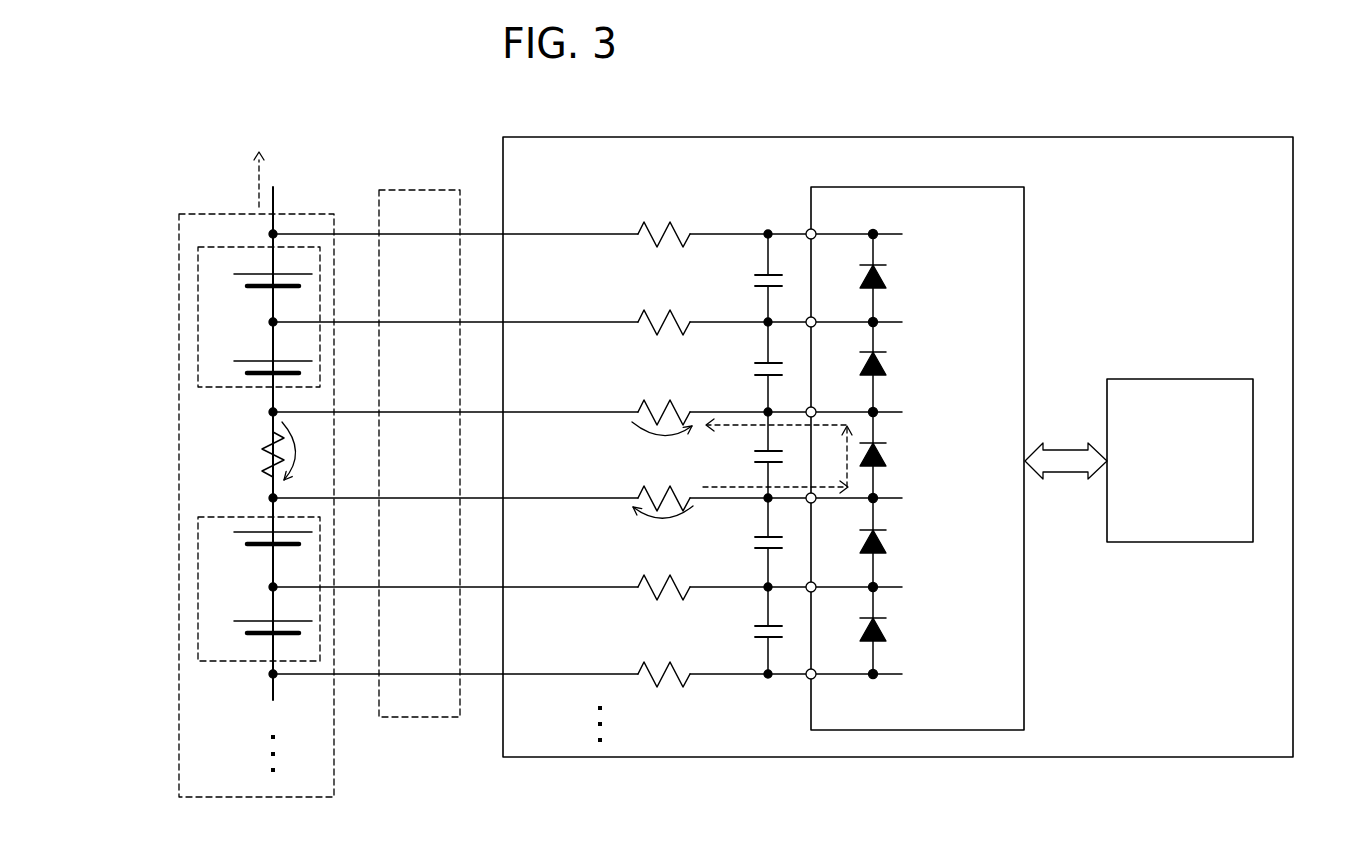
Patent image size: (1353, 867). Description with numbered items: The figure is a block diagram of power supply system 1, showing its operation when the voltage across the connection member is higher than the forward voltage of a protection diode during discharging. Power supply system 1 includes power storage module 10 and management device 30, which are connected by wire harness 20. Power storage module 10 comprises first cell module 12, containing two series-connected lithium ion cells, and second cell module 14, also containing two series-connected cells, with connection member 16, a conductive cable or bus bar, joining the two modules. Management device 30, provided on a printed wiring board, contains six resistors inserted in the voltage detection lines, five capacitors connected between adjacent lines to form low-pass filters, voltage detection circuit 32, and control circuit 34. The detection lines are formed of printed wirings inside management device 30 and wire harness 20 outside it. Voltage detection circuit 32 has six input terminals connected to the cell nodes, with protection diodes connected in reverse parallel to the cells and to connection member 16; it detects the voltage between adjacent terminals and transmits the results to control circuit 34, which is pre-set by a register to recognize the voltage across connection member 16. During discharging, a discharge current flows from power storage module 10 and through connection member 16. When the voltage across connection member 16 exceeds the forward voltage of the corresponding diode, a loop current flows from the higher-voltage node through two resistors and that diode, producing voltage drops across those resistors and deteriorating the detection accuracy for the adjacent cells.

The power supply system 1 is at (717, 475).
The power storage module 10 is at (179, 214).
The first cell module 12 is at (198, 387).
The second cell module 14 is at (198, 517).
The connection member 16 is at (266, 450).
The wire harness 20 is at (397, 190).
The management device 30 is at (1253, 137).
The voltage detection circuit 32 is at (1025, 187).
The control circuit 34 is at (1180, 379).